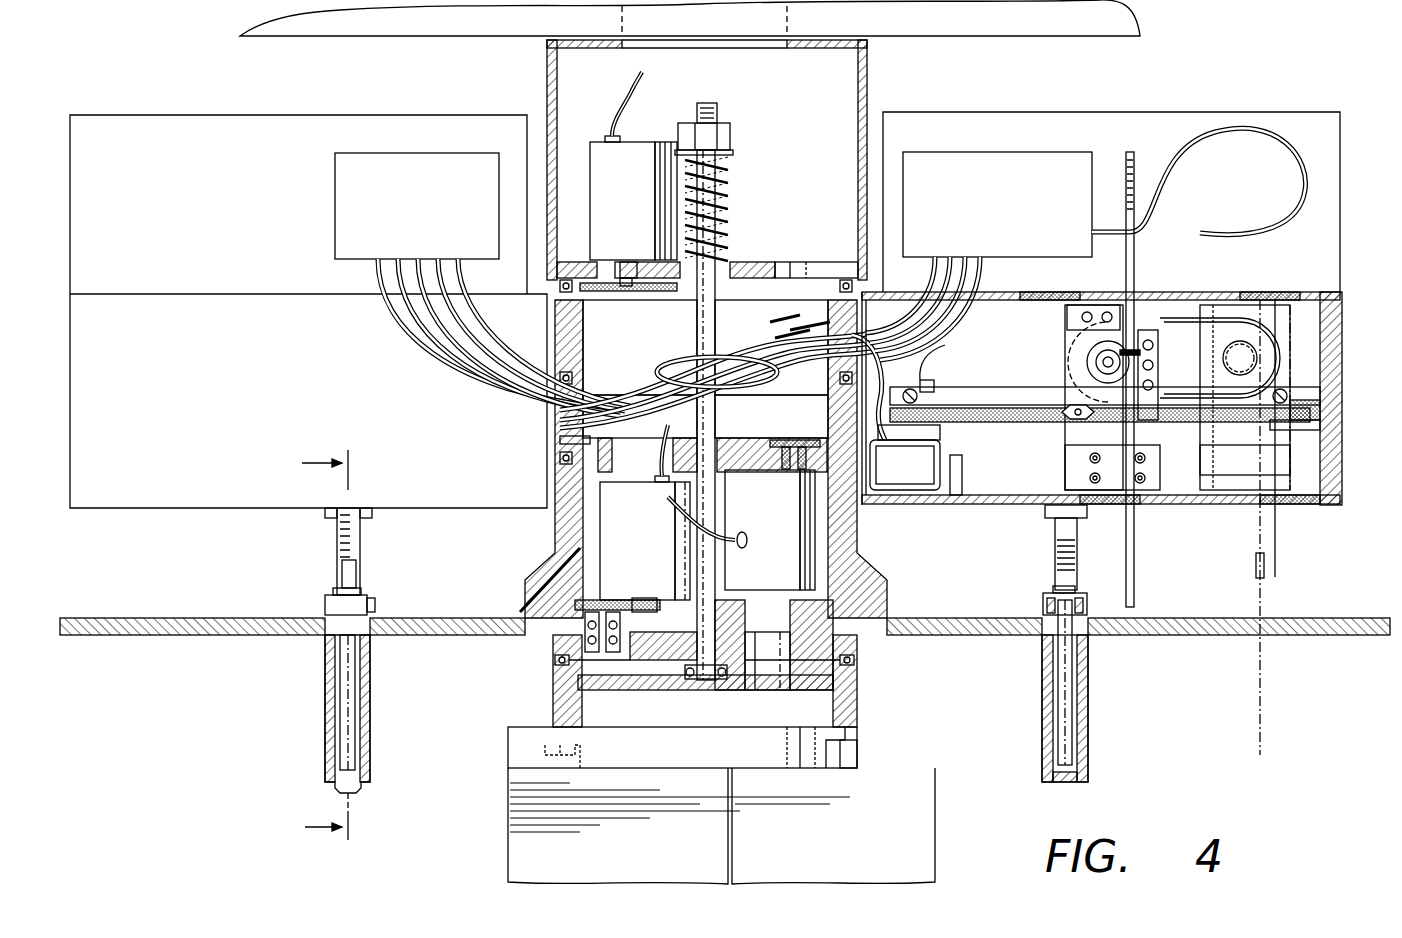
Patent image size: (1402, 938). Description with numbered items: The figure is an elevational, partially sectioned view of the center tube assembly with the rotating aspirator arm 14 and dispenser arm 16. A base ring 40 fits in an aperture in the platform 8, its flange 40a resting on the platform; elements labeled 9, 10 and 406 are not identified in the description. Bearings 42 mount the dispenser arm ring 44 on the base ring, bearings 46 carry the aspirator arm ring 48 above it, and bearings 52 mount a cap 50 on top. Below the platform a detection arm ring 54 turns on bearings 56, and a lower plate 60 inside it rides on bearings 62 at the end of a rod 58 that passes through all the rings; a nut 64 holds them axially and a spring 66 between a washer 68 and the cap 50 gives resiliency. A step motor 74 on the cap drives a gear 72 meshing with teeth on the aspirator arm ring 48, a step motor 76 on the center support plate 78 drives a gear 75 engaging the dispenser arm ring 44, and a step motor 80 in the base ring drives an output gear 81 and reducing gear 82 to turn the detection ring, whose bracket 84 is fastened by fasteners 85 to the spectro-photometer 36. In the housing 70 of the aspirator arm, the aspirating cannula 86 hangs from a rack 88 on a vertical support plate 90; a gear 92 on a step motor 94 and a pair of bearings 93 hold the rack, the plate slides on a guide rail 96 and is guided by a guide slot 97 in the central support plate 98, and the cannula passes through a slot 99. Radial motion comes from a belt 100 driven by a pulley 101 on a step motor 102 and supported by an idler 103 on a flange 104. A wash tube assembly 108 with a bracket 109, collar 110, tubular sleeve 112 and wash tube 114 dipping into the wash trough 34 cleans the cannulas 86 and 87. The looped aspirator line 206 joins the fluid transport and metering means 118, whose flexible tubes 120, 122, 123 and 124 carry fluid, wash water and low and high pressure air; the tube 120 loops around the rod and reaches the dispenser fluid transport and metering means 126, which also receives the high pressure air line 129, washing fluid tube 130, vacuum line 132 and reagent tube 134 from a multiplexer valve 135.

The platform 8 is at (170, 618).
The section line 9- 9 is at (325, 653).
The roof panel 10 is at (975, 36).
The aspirator arm 14 is at (1292, 108).
The dispenser arm 16 is at (185, 107).
The wash trough 34 is at (371, 756).
The spectro-photometer 36 is at (721, 826).
The base ring 40 is at (878, 588).
The flange 40a is at (890, 597).
The bearings 42 is at (558, 459).
The dispenser arm ring 44 is at (560, 441).
The bearings 46 is at (574, 379).
The aspirator arm ring 48 is at (583, 345).
The cap 50 is at (608, 268).
The bearings 52 is at (574, 310).
The detection arm ring 54 is at (860, 691).
The bearings 56 is at (553, 660).
The rod 58 is at (716, 421).
The lower plate 60 is at (625, 690).
The bearings 62 is at (690, 682).
The nut 64 is at (733, 138).
The spring 66 is at (733, 186).
The washer 68 is at (735, 153).
The housing 70 is at (1343, 361).
The gear 72 is at (634, 290).
The step motor 74 is at (633, 166).
The gear 75 is at (802, 438).
The step motor 76 is at (770, 530).
The center support plate 78 is at (745, 465).
The step motor 80 is at (673, 512).
The output gear 81 is at (645, 600).
The reducing gear 82 is at (590, 618).
The bracket 84 is at (682, 747).
The fasteners 85 is at (858, 735).
The aspirating cannula 86 is at (1135, 543).
The cannula 87 is at (340, 589).
The rack 88 is at (340, 551).
The support plate 90 is at (1300, 336).
The gear 92 is at (1103, 380).
The bearings 93 is at (1158, 366).
The step motor 94 is at (1065, 378).
The guide rail 96 is at (1242, 472).
The guide slot 97 is at (1178, 296).
The central support plate 98 is at (1225, 296).
The slot 99 is at (1020, 506).
The belt 100 is at (1000, 424).
The pulley 101 is at (940, 433).
The step motor 102 is at (905, 465).
The idler 103 is at (1300, 399).
The flange 104 is at (988, 390).
The wash tube assembly 108 is at (1053, 561).
The bracket 109 is at (1078, 545).
The collar 110 is at (368, 606).
The tubular sleeve 112 is at (365, 592).
The wash tube 114 is at (350, 696).
The fluid transport and metering means 118 is at (1048, 158).
The flexible tube 120 is at (462, 266).
The tubing 122 is at (958, 270).
The tube 123 is at (945, 312).
The tube 124 is at (1005, 292).
The fluid transport and metering means 126 is at (335, 181).
The high pressure air line 129 is at (465, 308).
The washing fluid tube 130 is at (455, 327).
The vacuum line 132 is at (425, 336).
The reagent tube 134 is at (405, 314).
The multiplexer valve 135 is at (377, 278).
The aspirator line 206 is at (1290, 204).
The diagonal brace 406 is at (530, 600).